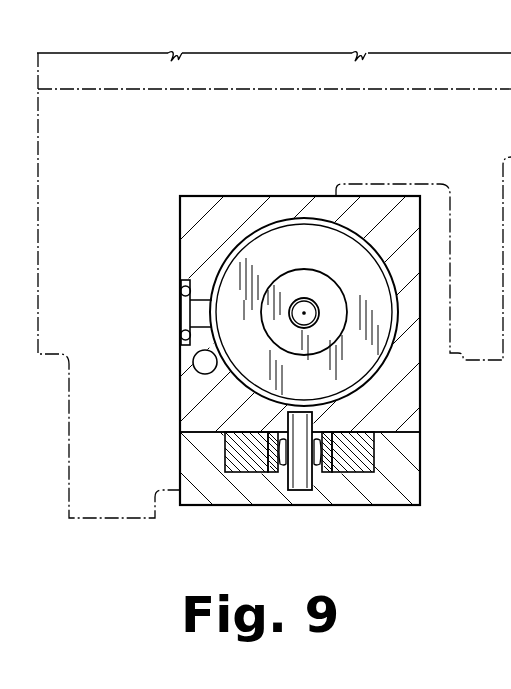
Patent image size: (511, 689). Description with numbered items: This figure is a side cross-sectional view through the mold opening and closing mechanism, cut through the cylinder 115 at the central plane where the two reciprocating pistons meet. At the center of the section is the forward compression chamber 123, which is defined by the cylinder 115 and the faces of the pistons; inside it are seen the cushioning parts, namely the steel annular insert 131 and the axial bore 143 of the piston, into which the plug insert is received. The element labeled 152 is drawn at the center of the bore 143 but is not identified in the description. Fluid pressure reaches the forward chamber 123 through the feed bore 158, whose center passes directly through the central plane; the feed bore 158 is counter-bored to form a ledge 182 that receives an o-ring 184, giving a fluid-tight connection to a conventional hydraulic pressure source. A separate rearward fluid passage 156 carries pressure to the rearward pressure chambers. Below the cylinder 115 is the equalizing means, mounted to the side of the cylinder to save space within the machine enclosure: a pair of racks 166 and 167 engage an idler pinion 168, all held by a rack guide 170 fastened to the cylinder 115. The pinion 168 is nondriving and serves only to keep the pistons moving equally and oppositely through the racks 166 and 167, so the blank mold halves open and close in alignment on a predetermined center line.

The cylinder 115 is at (180, 213).
The forward compression chamber 123 is at (262, 250).
The steel annular insert 131 is at (302, 280).
The axial bore 143 is at (316, 300).
The shaft 152 is at (316, 313).
The rearward fluid passage 156 is at (194, 367).
The feed bore 158 is at (200, 292).
The rack 166 is at (355, 474).
The rack 167 is at (240, 474).
The idler pinion 168 is at (326, 474).
The rack guide 170 is at (420, 456).
The ledge 182 is at (183, 319).
The o-ring 184 is at (183, 299).